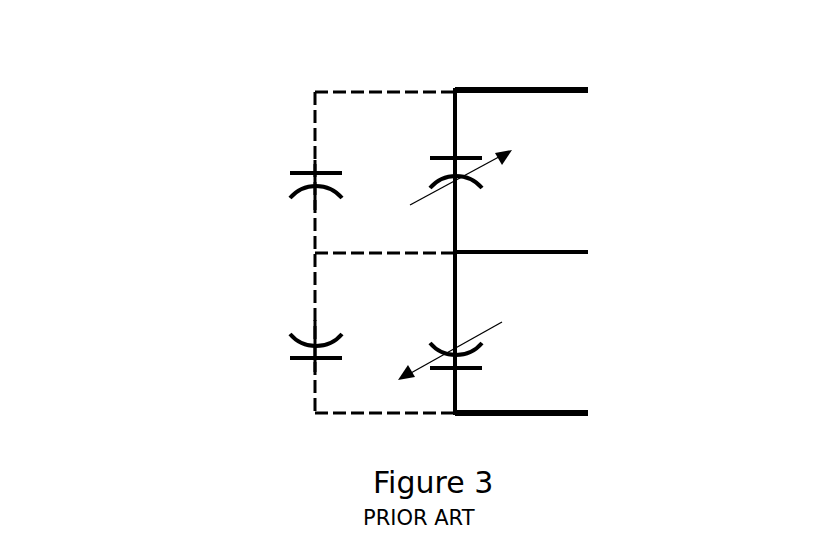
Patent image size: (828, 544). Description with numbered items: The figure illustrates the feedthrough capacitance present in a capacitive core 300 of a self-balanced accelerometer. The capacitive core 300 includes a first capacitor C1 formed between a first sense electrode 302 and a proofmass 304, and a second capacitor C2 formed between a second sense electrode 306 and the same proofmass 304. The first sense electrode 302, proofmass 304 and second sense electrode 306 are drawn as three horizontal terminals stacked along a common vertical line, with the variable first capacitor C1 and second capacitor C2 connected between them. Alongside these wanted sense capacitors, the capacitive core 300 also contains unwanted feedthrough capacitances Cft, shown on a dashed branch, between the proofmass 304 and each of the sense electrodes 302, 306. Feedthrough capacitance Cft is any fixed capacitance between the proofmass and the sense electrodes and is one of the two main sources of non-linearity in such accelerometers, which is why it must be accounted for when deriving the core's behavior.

The capacitive core 300 is at (178, 111).
The first sense electrode 302 is at (555, 86).
The proofmass 304 is at (560, 248).
The second sense electrode 306 is at (560, 409).
The first capacitor C1 is at (488, 176).
The second capacitor C2 is at (475, 351).
The feedthrough capacitance Cft is at (285, 262).